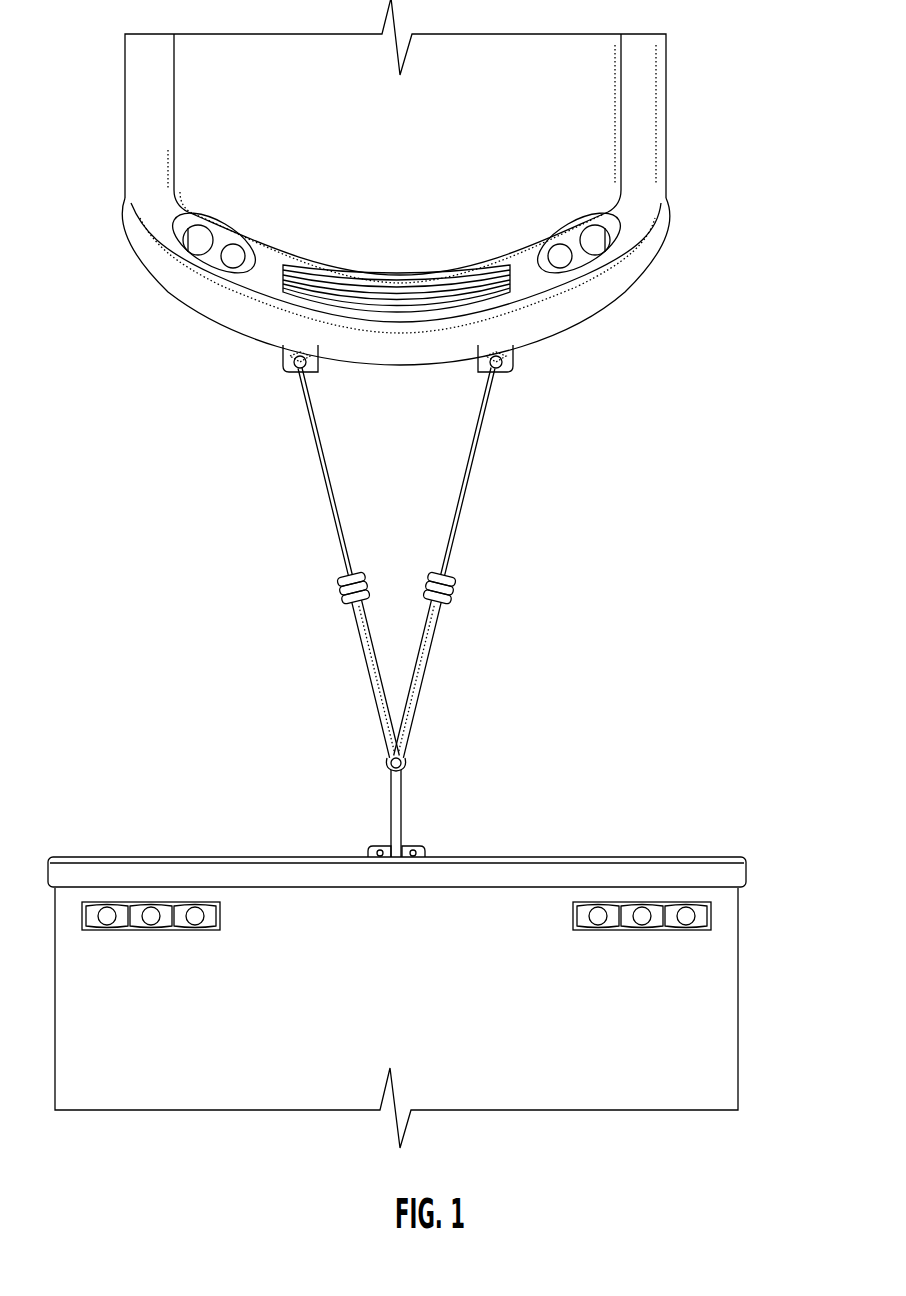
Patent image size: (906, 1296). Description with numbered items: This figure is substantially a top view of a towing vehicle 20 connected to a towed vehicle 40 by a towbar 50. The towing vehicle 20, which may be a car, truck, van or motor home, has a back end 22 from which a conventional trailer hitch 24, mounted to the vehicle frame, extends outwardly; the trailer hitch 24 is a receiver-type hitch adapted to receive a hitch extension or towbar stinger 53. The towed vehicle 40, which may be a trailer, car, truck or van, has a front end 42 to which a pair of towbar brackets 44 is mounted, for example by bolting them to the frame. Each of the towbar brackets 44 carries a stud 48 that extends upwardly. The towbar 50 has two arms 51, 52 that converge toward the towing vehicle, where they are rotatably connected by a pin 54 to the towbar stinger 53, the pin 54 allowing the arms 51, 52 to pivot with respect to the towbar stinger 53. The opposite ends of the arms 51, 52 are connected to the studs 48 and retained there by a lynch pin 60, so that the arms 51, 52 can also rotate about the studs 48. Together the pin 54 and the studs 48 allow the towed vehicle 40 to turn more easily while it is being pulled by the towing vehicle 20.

The towing vehicle 20 is at (740, 943).
The back end 22 is at (647, 857).
The trailer hitch 24 is at (424, 848).
The towed vehicle 40 is at (668, 124).
The front end 42 is at (666, 241).
The towbar brackets 44 is at (283, 348).
The stud 48 is at (304, 366).
The towbar 50 is at (406, 611).
The arm 51 is at (332, 497).
The arm 52 is at (462, 500).
The towbar stinger 53 is at (390, 813).
The pin 54 is at (388, 764).
The lynch pin 60 is at (287, 363).